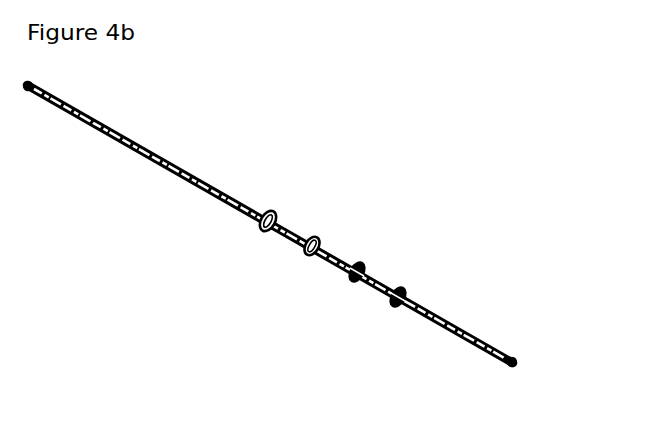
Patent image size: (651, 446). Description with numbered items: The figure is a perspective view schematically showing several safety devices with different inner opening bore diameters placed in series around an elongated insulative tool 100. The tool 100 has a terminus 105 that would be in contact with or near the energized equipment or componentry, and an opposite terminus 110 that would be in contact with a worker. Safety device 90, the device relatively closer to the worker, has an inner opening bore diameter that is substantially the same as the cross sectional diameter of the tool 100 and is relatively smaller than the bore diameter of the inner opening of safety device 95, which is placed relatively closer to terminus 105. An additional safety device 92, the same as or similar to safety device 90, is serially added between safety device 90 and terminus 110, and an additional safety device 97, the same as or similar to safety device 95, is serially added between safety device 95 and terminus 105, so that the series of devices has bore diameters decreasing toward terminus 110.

The elongated insulative tool 100 is at (468, 321).
The terminus 105 is at (32, 100).
The terminus 110 is at (529, 351).
The safety device 97 is at (246, 238).
The safety device 95 is at (326, 226).
The safety device 90 is at (374, 256).
The safety device 92 is at (374, 316).